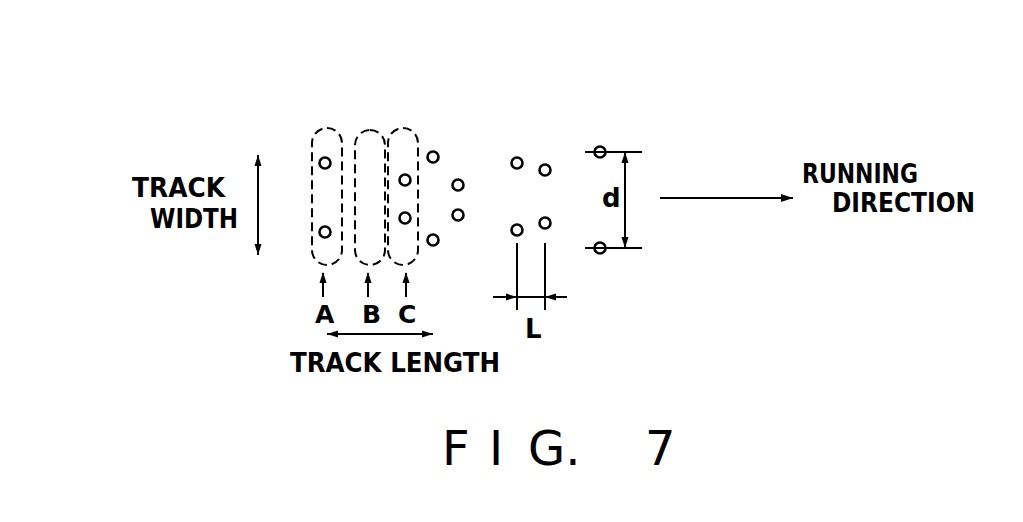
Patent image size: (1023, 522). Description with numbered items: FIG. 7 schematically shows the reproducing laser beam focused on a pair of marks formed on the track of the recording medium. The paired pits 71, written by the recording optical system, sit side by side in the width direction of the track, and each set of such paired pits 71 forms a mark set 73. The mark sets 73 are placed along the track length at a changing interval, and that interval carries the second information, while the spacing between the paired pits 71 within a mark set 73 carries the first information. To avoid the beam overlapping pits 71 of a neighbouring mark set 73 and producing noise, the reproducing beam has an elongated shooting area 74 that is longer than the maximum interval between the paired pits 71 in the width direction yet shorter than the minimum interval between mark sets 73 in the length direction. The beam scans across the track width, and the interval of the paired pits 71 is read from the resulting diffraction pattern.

The paired pits 71 is at (514, 223).
The mark set 73 is at (480, 80).
The shooting area 74 is at (325, 126).